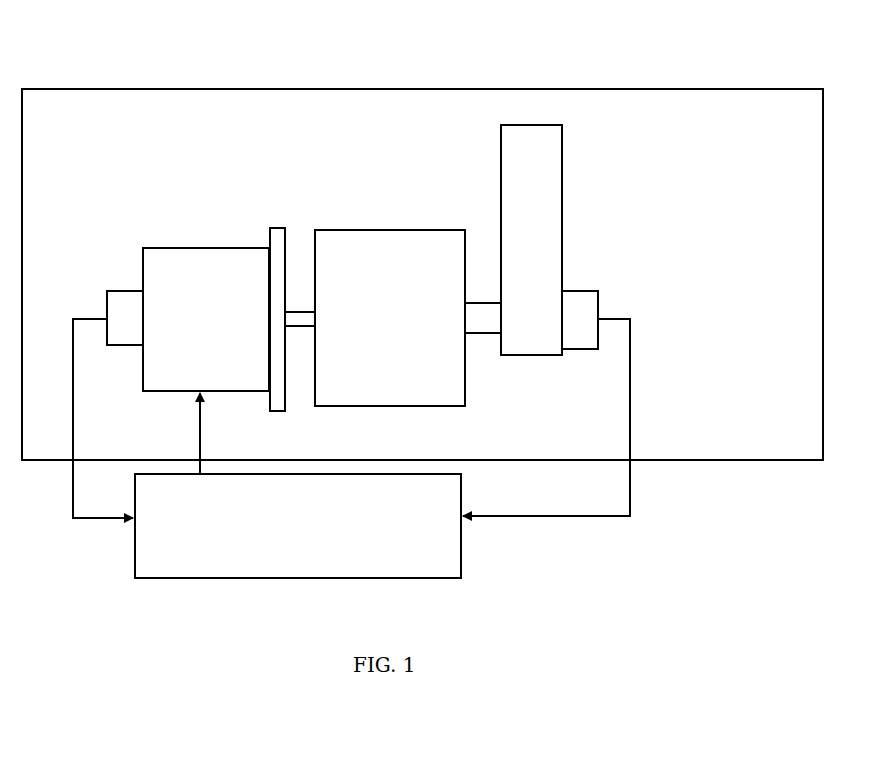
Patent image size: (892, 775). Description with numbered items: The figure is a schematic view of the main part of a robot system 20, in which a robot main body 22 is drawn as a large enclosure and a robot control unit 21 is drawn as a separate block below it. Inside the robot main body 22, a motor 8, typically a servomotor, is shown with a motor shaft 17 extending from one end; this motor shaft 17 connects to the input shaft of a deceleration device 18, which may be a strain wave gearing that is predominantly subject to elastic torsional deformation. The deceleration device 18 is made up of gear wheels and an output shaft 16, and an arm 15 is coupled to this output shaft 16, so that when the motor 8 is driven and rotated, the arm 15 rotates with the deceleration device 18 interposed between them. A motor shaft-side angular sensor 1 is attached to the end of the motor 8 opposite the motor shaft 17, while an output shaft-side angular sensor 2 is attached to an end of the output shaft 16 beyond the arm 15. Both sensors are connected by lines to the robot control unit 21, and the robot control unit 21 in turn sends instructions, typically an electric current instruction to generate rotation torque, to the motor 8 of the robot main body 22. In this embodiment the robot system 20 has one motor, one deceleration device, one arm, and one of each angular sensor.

The robot system 20 is at (189, 62).
The robot main body 22 is at (477, 48).
The motor shaft-side angular sensor 1 is at (125, 291).
The motor 8 is at (207, 248).
The motor shaft 17 is at (297, 326).
The deceleration device 18 is at (390, 230).
The output shaft 16 is at (483, 333).
The arm 15 is at (501, 182).
The output shaft-side angular sensor 2 is at (578, 291).
The robot control unit 21 is at (461, 539).